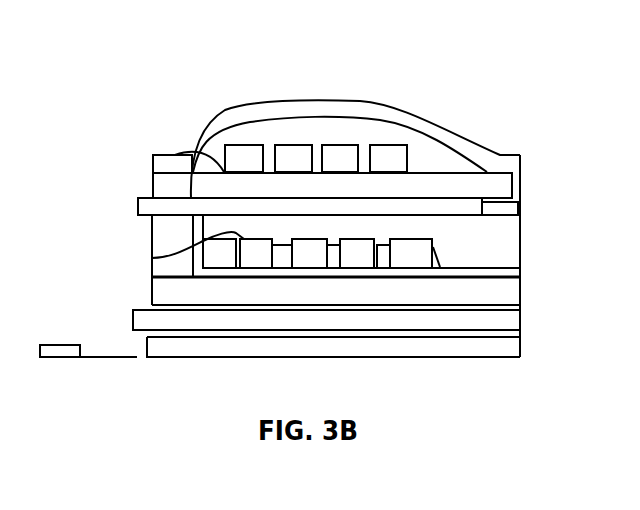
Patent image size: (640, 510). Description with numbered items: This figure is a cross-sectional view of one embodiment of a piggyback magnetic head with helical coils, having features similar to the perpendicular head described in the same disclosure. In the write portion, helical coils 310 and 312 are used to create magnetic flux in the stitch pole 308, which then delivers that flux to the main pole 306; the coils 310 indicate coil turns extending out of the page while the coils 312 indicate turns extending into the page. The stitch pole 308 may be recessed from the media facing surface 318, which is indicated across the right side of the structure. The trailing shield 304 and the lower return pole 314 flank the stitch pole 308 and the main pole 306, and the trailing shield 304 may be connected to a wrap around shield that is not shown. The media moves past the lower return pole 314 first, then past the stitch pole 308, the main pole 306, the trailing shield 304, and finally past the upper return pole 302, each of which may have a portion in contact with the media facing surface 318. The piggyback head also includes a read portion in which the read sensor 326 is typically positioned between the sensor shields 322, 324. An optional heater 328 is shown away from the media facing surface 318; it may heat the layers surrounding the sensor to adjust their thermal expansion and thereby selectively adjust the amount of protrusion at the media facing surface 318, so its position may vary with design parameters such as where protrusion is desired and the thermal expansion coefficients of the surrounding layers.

The upper return pole 302 is at (466, 133).
The trailing shield 304 is at (521, 187).
The main pole 306 is at (520, 212).
The stitch pole 308 is at (474, 216).
The helical coils 310 is at (175, 156).
The helical coils 312 is at (152, 258).
The lower return pole 314 is at (372, 300).
The media facing surface 318 is at (533, 280).
The sensor shield 322 is at (133, 311).
The sensor shield 324 is at (147, 348).
The read sensor 326 is at (514, 333).
The heater 328 is at (68, 345).